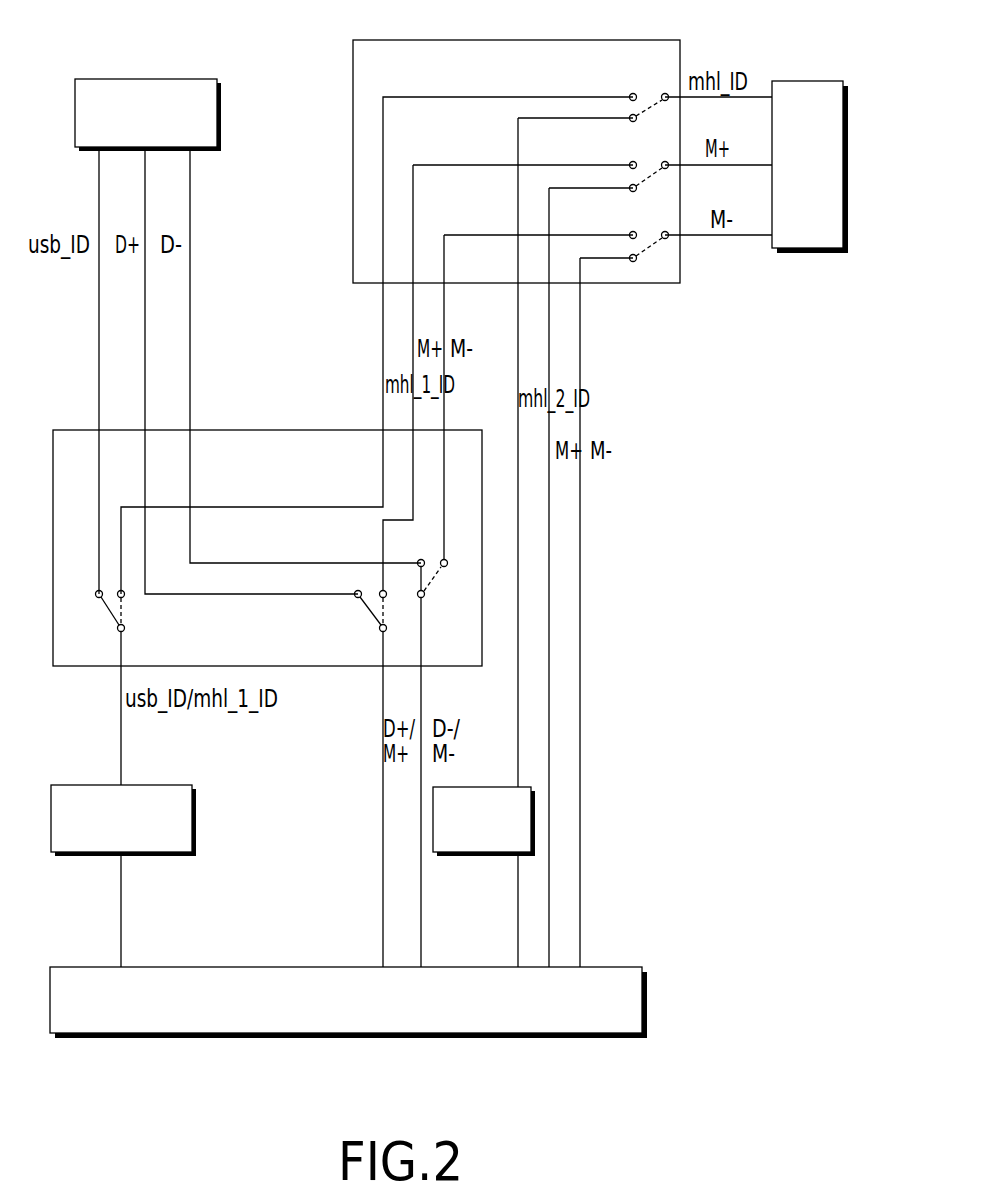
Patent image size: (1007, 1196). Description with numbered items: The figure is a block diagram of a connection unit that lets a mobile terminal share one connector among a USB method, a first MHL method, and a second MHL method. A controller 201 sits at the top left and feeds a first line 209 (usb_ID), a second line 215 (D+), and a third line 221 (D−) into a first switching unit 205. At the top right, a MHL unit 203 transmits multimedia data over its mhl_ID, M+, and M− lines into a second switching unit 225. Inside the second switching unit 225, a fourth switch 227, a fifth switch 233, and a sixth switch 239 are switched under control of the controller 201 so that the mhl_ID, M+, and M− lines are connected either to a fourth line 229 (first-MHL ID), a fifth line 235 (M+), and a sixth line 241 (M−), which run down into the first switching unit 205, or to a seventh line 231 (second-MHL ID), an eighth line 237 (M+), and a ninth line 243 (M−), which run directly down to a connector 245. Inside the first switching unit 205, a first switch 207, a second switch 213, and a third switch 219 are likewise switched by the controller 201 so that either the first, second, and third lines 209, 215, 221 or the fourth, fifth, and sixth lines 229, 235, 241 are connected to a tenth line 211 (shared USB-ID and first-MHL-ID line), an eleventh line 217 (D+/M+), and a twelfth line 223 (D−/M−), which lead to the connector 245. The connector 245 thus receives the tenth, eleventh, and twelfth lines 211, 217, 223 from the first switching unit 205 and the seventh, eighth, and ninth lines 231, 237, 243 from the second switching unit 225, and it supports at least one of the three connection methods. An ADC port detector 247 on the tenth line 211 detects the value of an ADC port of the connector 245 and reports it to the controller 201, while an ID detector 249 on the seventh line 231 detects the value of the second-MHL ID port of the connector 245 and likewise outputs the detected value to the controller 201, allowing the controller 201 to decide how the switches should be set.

The controller 201 is at (147, 79).
The MHL unit 203 is at (810, 81).
The first switching unit 205 is at (275, 430).
The first switch 207 is at (105, 624).
The first line 209 is at (99, 566).
The tenth line 211 is at (119, 652).
The second switch 213 is at (368, 617).
The second line 215 is at (250, 597).
The eleventh line 217 is at (381, 650).
The third switch 219 is at (416, 574).
The third line 221 is at (392, 562).
The twelfth line 223 is at (430, 653).
The second switching unit 225 is at (518, 40).
The fourth switch 227 is at (648, 93).
The fourth line 229 is at (588, 96).
The seventh line 231 is at (607, 118).
The fifth switch 233 is at (648, 162).
The fifth line 235 is at (588, 163).
The eighth line 237 is at (615, 188).
The sixth switch 239 is at (648, 232).
The sixth line 241 is at (588, 233).
The ninth line 243 is at (606, 262).
The connector 245 is at (647, 1003).
The ADC port detector 247 is at (193, 818).
The ID detector 249 is at (482, 857).